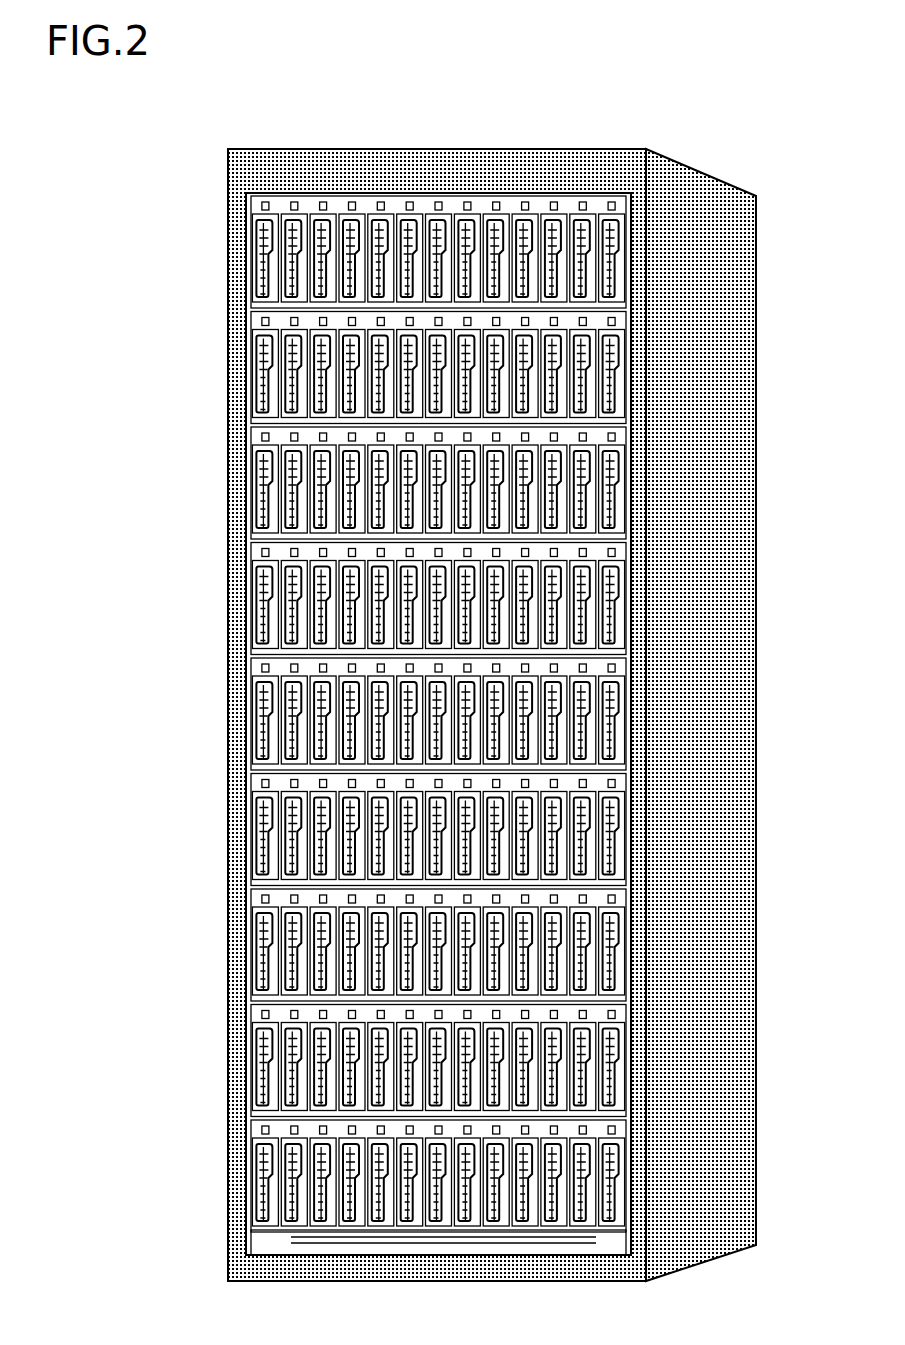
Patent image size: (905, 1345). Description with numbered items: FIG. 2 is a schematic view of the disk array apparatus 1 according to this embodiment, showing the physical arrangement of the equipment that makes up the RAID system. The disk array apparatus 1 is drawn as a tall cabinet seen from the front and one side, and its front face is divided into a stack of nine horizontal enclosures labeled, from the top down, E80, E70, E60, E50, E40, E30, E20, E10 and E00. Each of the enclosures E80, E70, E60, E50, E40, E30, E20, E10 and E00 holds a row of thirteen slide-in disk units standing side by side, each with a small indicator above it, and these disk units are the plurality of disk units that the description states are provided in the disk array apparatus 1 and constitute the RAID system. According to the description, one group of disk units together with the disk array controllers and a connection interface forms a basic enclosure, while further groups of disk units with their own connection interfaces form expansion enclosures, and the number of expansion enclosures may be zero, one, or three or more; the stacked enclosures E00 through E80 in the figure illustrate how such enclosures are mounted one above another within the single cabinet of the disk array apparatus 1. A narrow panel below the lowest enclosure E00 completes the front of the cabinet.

The disk array apparatus 1 is at (753, 806).
The enclosure E80 is at (235, 246).
The enclosure E70 is at (235, 359).
The enclosure E60 is at (235, 470).
The enclosure E50 is at (235, 591).
The enclosure E40 is at (235, 701).
The enclosure E30 is at (235, 824).
The enclosure E20 is at (235, 934).
The enclosure E10 is at (235, 1043).
The enclosure E00 is at (235, 1166).